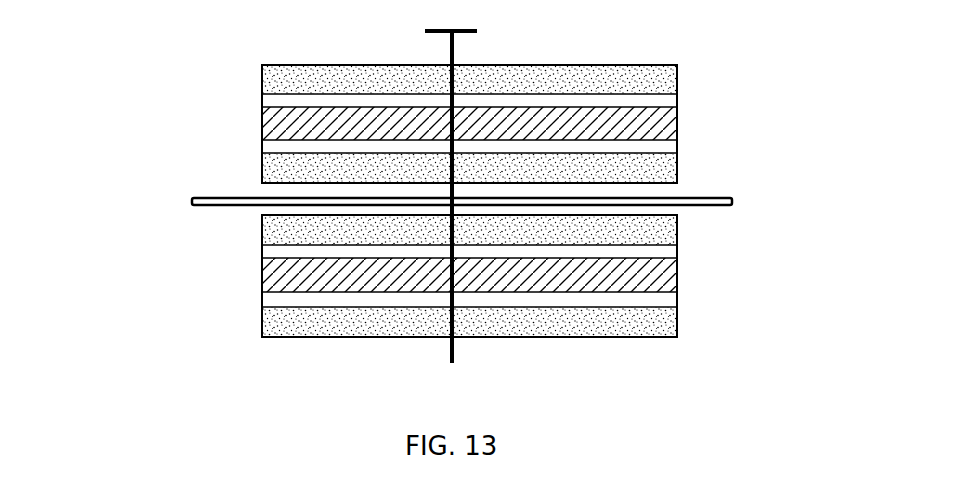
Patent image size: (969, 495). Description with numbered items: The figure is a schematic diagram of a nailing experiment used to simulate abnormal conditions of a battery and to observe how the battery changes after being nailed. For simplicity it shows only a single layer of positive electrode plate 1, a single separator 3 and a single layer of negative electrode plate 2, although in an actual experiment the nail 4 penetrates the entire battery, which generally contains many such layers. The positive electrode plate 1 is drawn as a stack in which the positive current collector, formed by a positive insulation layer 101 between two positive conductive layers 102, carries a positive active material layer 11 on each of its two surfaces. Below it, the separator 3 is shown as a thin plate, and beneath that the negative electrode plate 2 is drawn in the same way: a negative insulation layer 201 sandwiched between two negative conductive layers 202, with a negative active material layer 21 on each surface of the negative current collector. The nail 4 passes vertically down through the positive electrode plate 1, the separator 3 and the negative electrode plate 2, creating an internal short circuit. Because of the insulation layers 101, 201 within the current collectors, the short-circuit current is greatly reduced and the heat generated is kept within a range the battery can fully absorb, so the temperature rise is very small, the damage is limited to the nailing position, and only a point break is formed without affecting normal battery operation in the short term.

The positive electrode plate 1 is at (253, 92).
The positive insulation layer 101 is at (262, 125).
The positive conductive layer 102 is at (653, 100).
The positive active material layer 11 is at (650, 82).
The negative electrode plate 2 is at (253, 297).
The negative insulation layer 201 is at (262, 275).
The negative conductive layer 202 is at (653, 250).
The negative active material layer 21 is at (677, 228).
The separator 3 is at (240, 196).
The nail 4 is at (450, 52).